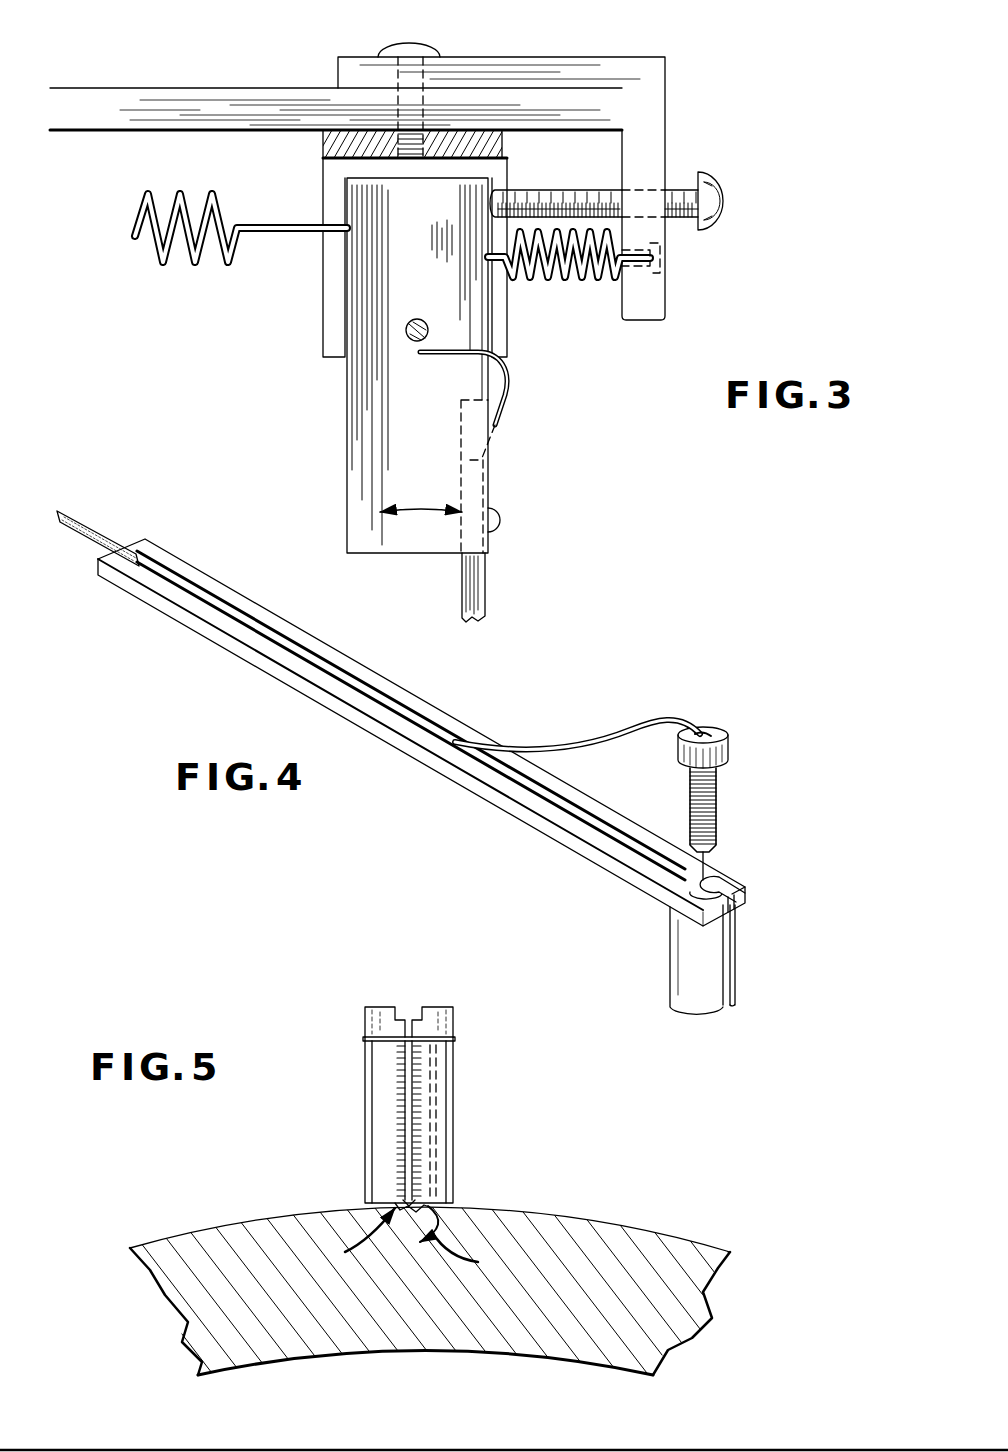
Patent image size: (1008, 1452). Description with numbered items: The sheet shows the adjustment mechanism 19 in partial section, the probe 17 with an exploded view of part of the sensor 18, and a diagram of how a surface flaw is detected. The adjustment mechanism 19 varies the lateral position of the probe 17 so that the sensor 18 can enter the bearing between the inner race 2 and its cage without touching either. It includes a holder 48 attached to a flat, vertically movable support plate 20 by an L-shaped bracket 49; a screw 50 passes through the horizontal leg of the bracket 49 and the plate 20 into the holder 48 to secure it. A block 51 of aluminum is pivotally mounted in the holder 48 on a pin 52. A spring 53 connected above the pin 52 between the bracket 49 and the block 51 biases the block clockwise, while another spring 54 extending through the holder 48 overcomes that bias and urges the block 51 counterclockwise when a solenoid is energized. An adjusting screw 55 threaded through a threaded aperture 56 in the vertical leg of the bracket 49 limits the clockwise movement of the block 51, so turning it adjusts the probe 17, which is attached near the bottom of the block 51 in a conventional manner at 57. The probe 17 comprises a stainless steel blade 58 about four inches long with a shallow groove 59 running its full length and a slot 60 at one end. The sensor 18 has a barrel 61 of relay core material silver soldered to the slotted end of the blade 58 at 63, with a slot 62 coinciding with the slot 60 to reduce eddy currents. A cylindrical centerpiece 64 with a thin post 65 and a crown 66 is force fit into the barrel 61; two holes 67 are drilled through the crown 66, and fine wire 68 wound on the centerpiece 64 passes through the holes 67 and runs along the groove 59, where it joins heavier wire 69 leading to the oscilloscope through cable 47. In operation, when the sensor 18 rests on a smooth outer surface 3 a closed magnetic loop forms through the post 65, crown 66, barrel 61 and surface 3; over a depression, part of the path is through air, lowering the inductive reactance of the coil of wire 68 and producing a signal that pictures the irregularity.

In FIG. 5, the inner race 2 is at (685, 1305).
In FIG. 5, the outer surface 3 is at (655, 1233).
In FIG. 3, the probe 17 is at (492, 588).
In FIG. 4, the probe 17 is at (603, 681).
In FIG. 4, the sensor 18 is at (793, 792).
In FIG. 5, the sensor 18 is at (478, 1066).
In FIG. 3, the adjustment mechanism 19 is at (275, 344).
In FIG. 3, the support plate 20 is at (222, 88).
In FIG. 3, the cable 47 is at (445, 358).
In FIG. 3, the holder 48 is at (323, 176).
In FIG. 3, the L-shaped bracket 49 is at (668, 57).
In FIG. 3, the screw 50 is at (430, 46).
In FIG. 3, the block 51 is at (420, 279).
In FIG. 3, the pin 52 is at (424, 321).
In FIG. 3, the spring 53 is at (566, 278).
In FIG. 3, the spring 54 is at (192, 265).
In FIG. 3, the adjusting screw 55 is at (711, 178).
In FIG. 3, the threaded aperture 56 is at (607, 196).
In FIG. 3, the probe attachment 57 is at (502, 516).
In FIG. 4, the blade 58 is at (390, 684).
In FIG. 4, the groove 59 is at (560, 801).
In FIG. 4, the slot 60 is at (740, 913).
In FIG. 4, the barrel 61 is at (690, 962).
In FIG. 5, the barrel 61 is at (455, 1118).
In FIG. 4, the slot 62 is at (733, 965).
In FIG. 4, the silver solder joint 63 is at (685, 917).
In FIG. 4, the centerpiece 64 is at (648, 786).
In FIG. 4, the post 65 is at (712, 853).
In FIG. 5, the post 65 is at (398, 1135).
In FIG. 4, the crown 66 is at (723, 764).
In FIG. 5, the crown 66 is at (362, 1024).
In FIG. 4, the holes 67 is at (712, 736).
In FIG. 4, the wire 68 is at (690, 792).
In FIG. 5, the wire 68 is at (400, 1118).
In FIG. 4, the heavier wire 69 is at (102, 530).